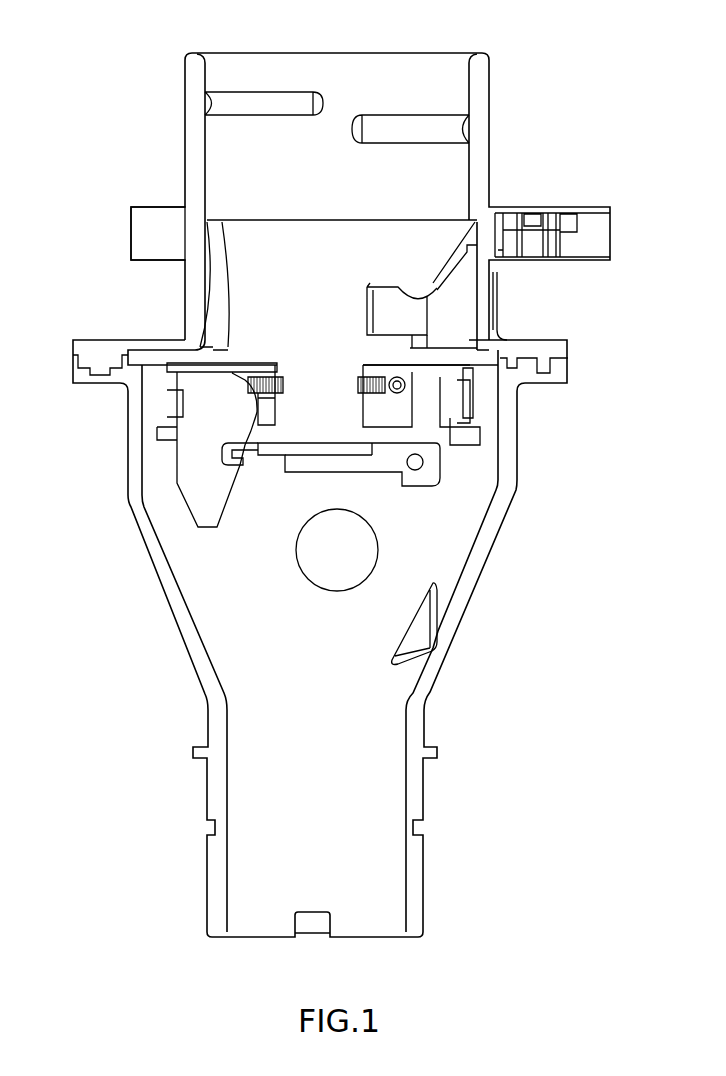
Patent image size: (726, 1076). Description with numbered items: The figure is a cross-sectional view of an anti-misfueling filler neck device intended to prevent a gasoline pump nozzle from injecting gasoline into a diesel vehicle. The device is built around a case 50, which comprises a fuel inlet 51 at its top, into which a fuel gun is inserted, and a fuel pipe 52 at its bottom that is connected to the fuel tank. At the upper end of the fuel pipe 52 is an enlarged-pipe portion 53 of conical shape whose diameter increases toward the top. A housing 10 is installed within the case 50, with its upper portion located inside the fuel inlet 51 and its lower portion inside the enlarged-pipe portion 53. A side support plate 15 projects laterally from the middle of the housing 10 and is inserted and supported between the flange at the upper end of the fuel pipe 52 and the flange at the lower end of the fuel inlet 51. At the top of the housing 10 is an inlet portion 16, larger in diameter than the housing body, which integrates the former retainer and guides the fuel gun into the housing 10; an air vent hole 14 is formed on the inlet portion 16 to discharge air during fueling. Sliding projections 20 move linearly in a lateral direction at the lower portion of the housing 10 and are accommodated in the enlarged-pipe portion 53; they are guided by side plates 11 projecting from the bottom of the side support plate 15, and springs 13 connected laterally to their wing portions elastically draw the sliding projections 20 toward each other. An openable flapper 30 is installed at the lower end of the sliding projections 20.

The housing 10 is at (288, 200).
The side plate 11 is at (323, 388).
The spring 13 is at (247, 383).
The air vent hole 14 is at (398, 302).
The side support plate 15 is at (152, 356).
The inlet portion 16 is at (413, 217).
The sliding projection 20 is at (190, 473).
The flapper 30 is at (425, 494).
The case 50 is at (157, 184).
The fuel inlet 51 is at (483, 150).
The fuel pipe 52 is at (413, 880).
The enlarged-pipe portion 53 is at (468, 595).